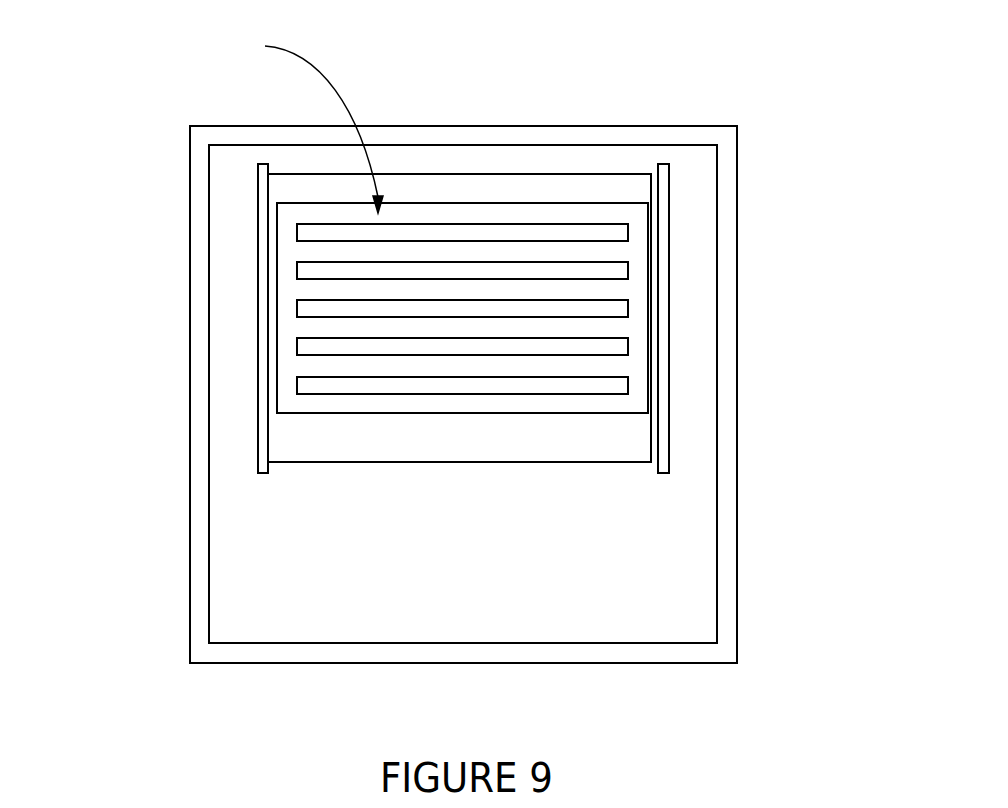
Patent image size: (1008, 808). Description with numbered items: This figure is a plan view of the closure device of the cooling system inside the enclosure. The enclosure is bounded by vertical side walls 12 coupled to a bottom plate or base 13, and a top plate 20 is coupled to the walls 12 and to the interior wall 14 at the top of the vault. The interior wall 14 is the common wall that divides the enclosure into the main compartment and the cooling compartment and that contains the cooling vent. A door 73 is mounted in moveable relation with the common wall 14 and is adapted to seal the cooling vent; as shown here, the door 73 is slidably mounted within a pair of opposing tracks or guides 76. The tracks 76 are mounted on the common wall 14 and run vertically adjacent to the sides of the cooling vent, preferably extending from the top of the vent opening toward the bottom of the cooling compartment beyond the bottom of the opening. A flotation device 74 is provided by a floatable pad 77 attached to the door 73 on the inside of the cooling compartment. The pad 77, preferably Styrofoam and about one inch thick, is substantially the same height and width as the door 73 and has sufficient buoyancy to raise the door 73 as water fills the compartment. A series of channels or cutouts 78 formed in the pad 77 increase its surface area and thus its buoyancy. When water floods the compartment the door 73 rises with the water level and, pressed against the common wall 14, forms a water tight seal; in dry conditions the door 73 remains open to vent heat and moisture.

The vertical side walls 12 is at (190, 447).
The bottom plate or base 13 is at (660, 663).
The interior wall 14 is at (690, 167).
The top plate 20 is at (387, 127).
The door 73 is at (387, 440).
The flotation device 74 is at (309, 123).
The tracks or guides 76 is at (258, 243).
The floatable pad 77 is at (543, 403).
The channels or cutouts 78 is at (523, 230).